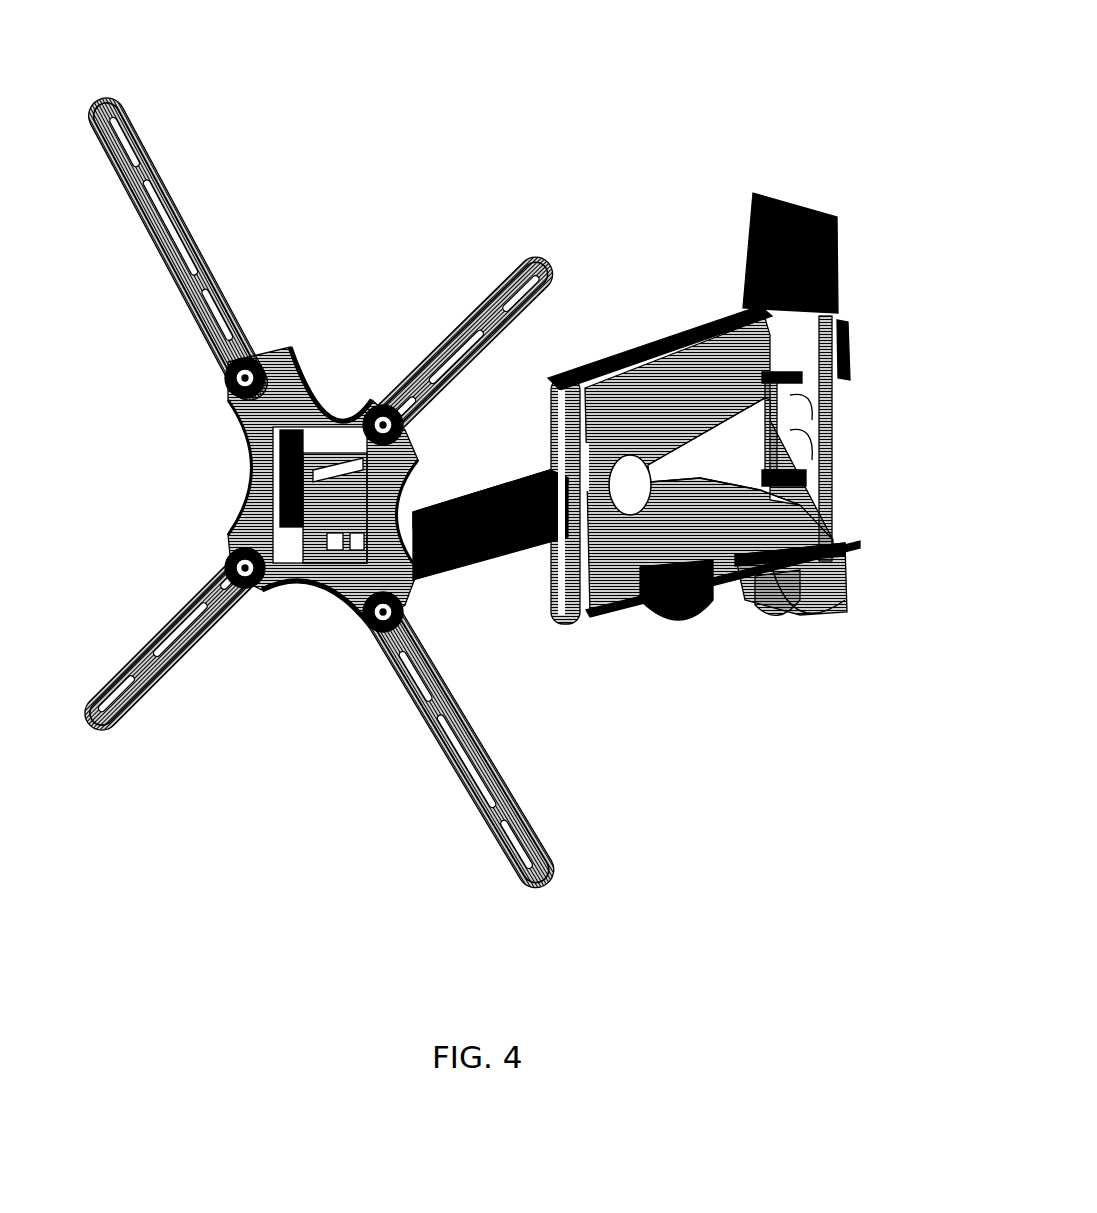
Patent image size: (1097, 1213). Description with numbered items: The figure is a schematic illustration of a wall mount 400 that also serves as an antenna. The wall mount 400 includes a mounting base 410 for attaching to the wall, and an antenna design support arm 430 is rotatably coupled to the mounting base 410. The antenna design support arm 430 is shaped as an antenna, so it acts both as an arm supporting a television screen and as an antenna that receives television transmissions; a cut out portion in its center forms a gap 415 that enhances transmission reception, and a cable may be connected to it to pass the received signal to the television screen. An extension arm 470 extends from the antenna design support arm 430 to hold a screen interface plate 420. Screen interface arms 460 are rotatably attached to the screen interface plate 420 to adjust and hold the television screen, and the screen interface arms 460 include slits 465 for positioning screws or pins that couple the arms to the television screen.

The wall mount 400 is at (867, 160).
The mounting base 410 is at (840, 445).
The gap 415 is at (650, 483).
The screen interface plate 420 is at (320, 608).
The antenna design support arm 430 is at (652, 383).
The screen interface arms 460 is at (172, 173).
The slits 465 is at (107, 168).
The extension arm 470 is at (488, 560).